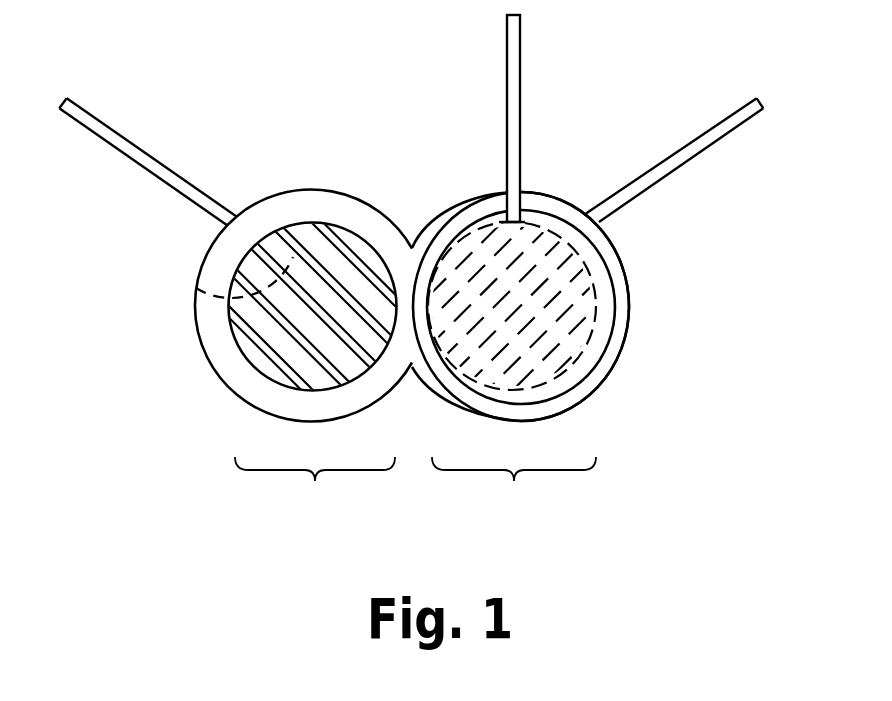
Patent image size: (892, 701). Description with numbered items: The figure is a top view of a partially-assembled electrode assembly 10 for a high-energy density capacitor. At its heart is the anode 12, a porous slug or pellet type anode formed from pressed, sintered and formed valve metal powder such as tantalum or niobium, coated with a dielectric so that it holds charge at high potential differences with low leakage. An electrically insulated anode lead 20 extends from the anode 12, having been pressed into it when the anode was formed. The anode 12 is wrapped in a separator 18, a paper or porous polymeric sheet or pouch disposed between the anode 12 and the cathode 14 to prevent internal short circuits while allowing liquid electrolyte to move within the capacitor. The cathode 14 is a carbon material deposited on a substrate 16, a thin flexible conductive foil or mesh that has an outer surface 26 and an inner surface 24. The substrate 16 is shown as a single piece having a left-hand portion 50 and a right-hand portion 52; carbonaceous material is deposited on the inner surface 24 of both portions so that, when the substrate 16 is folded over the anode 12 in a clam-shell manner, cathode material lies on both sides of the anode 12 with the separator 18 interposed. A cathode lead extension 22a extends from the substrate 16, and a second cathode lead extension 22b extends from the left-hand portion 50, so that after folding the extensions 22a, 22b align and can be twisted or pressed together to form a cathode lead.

The electrical cable assembly 10 is at (444, 28).
The anode 12 is at (523, 285).
The cathode 14 is at (270, 332).
The substrate 16 is at (412, 277).
The separator 18 is at (603, 347).
The anode lead 20 is at (520, 130).
The cathode lead extension 22a is at (722, 138).
The second cathode lead extension 22b is at (98, 138).
The inner surface 24 is at (320, 208).
The outer surface 26 is at (205, 292).
The left-hand portion 50 is at (315, 484).
The right-hand portion 52 is at (514, 484).